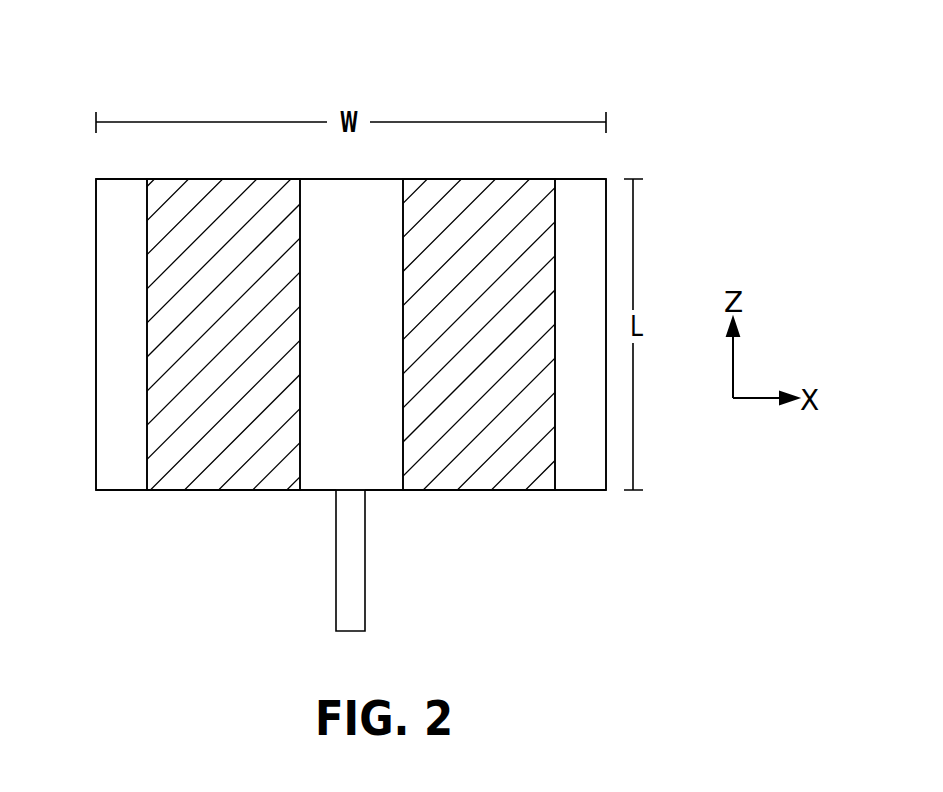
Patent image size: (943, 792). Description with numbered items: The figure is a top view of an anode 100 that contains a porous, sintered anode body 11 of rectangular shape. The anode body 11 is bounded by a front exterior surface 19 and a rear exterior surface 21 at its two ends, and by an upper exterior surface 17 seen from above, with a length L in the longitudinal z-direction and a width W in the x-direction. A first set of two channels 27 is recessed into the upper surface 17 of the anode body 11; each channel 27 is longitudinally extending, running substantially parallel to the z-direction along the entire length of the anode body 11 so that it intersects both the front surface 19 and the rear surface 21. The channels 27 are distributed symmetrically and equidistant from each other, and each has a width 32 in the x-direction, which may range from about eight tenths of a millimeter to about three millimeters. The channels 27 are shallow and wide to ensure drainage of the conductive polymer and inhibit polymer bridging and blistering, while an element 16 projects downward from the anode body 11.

The anode 100 is at (688, 104).
The anode body 11 is at (510, 491).
The stem / connector 16 is at (350, 604).
The upper exterior surface 17 is at (113, 308).
The front exterior surface 19 is at (125, 491).
The rear exterior surface 21 is at (113, 180).
The channels 27 is at (222, 474).
The width 32 is at (300, 170).